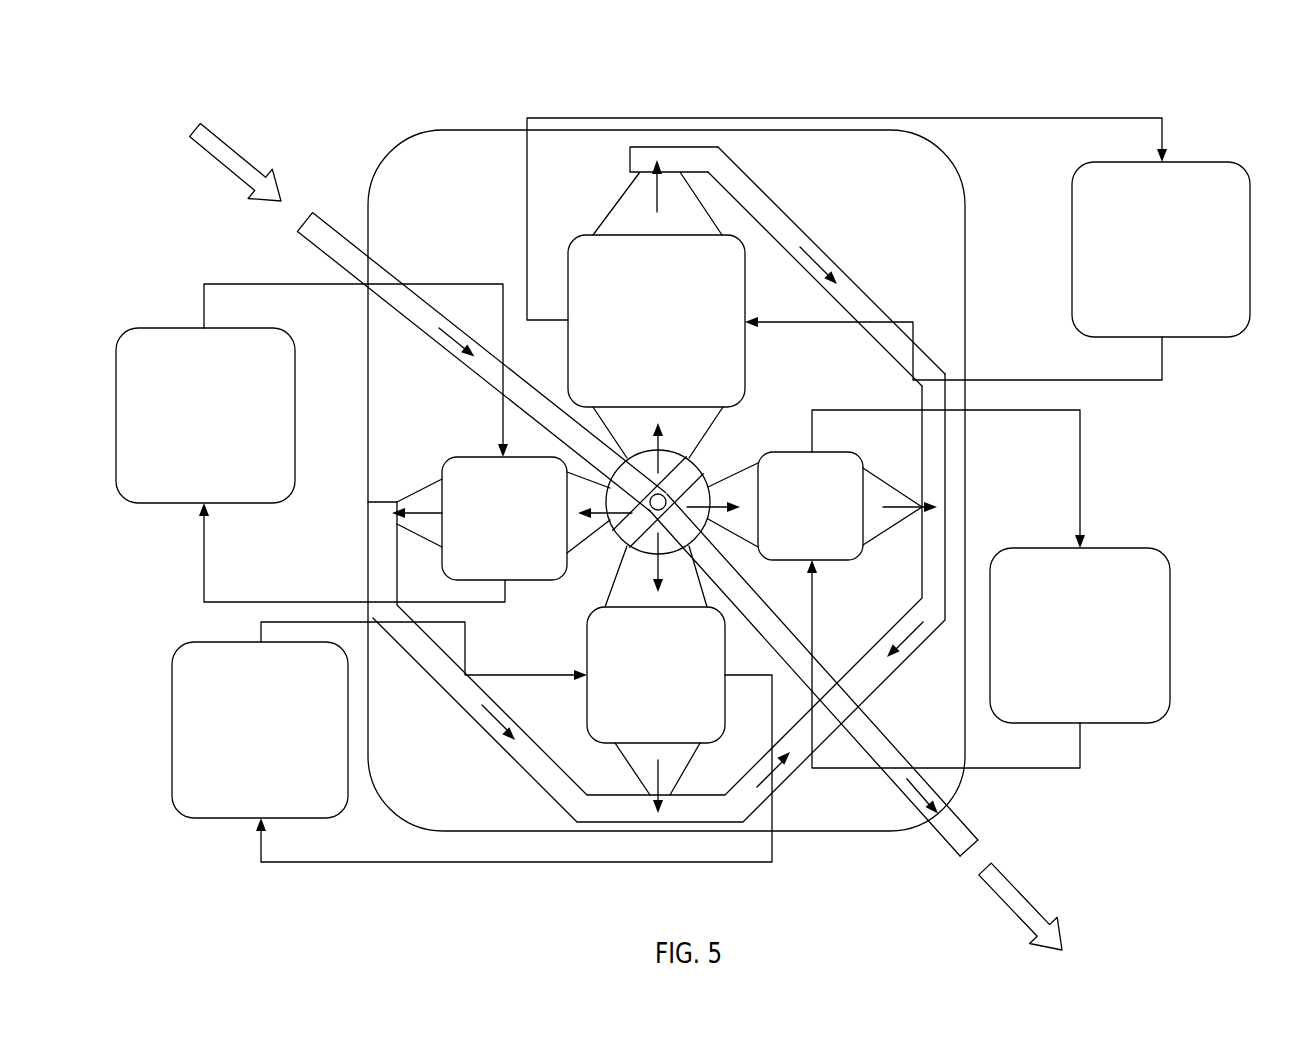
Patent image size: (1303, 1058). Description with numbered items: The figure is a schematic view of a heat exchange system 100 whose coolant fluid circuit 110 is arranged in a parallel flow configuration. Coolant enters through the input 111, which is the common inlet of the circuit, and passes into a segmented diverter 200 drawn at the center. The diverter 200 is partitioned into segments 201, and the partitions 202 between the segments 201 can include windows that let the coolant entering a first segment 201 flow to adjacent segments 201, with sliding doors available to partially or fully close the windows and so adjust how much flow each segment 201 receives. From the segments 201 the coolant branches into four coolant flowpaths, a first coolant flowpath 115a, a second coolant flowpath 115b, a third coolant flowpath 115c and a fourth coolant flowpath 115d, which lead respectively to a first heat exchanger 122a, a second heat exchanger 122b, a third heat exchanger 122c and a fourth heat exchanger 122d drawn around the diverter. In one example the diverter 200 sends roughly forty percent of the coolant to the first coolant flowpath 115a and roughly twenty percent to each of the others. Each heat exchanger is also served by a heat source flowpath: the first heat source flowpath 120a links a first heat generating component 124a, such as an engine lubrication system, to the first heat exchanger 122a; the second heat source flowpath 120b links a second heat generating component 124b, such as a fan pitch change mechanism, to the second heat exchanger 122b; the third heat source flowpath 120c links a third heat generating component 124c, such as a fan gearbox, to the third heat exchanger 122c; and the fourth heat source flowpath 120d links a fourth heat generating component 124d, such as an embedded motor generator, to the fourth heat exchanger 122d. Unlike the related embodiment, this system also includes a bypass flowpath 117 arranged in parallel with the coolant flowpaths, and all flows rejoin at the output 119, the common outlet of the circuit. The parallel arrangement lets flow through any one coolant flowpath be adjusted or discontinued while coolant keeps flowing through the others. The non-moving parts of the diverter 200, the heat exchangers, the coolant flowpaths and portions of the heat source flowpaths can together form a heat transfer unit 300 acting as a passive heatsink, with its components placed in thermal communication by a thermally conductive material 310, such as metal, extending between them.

The heat exchange system 100 is at (227, 93).
The coolant fluid circuit 110 is at (443, 290).
The input 111 is at (302, 222).
The first coolant flowpath 115a is at (612, 432).
The second coolant flowpath 115b is at (762, 452).
The third coolant flowpath 115c is at (690, 590).
The fourth coolant flowpath 115d is at (590, 573).
The bypass flowpath 117 is at (800, 677).
The output 119 is at (975, 852).
The first heat source flowpath 120a is at (907, 118).
The second heat source flowpath 120b is at (1080, 750).
The third heat source flowpath 120c is at (326, 863).
The fourth heat source flowpath 120d is at (203, 308).
The first heat exchanger 122a is at (747, 250).
The second heat exchanger 122b is at (832, 560).
The third heat exchanger 122c is at (593, 742).
The fourth heat exchanger 122d is at (447, 455).
The first heat generating component 124a is at (1220, 162).
The second heat generating component 124b is at (1170, 640).
The third heat generating component 124c is at (172, 752).
The fourth heat generating component 124d is at (116, 420).
The segmented diverter 200 is at (757, 455).
The segment 201 is at (770, 550).
The partition 202 is at (643, 560).
The heat transfer unit 300 is at (965, 488).
The thermally conductive material 310 is at (965, 308).